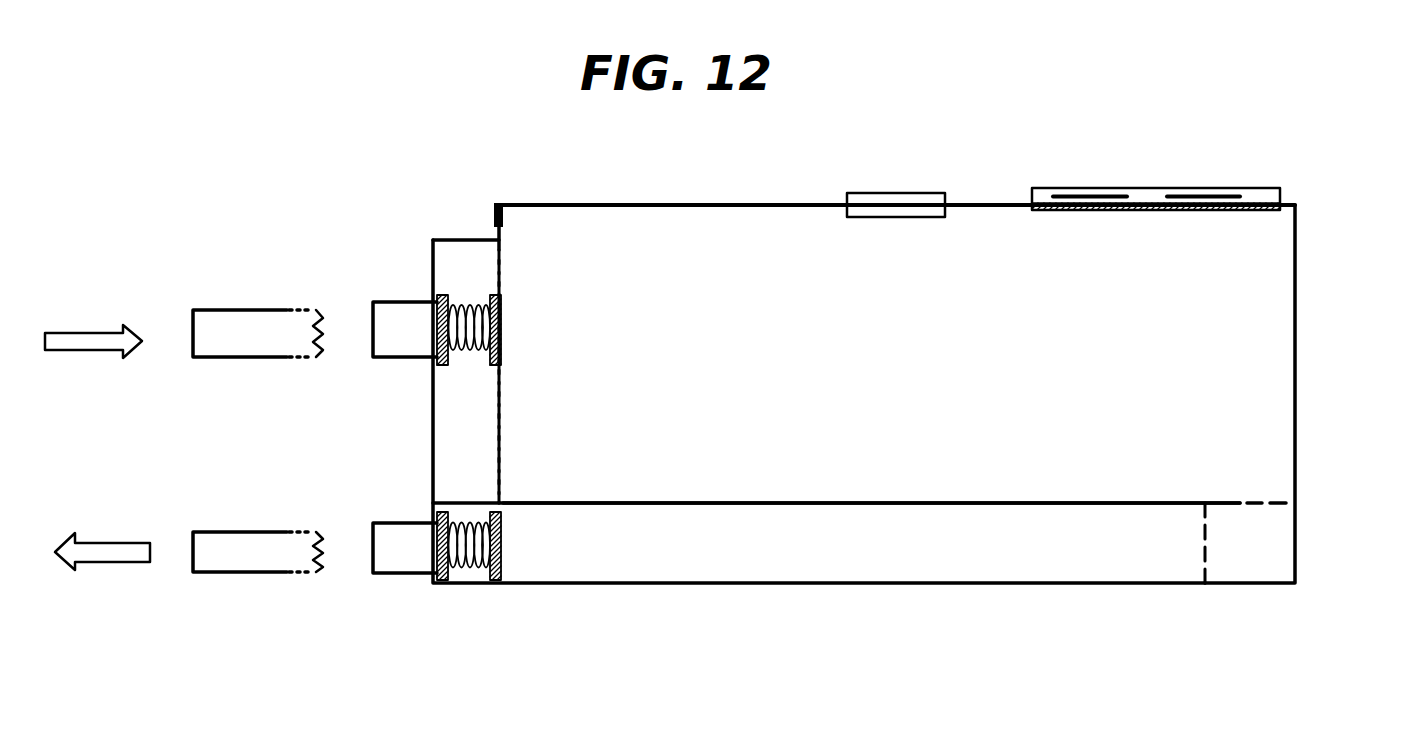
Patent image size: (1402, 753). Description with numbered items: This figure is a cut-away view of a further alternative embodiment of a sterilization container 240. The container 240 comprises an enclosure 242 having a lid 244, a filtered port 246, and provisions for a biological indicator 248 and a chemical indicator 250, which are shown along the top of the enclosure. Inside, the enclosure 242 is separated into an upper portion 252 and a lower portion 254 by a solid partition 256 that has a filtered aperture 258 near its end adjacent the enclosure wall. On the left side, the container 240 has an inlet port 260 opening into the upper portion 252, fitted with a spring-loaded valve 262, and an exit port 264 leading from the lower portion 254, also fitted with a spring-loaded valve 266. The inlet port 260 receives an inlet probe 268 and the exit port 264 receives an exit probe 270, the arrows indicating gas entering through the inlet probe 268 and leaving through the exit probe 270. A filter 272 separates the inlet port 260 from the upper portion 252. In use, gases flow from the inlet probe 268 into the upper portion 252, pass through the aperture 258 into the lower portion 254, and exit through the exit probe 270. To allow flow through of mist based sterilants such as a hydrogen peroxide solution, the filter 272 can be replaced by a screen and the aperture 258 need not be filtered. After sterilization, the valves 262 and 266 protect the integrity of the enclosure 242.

The container 240 is at (581, 614).
The enclosure 242 is at (1296, 382).
The lid 244 is at (497, 203).
The filtered port 246 is at (888, 193).
The biological indicator 248 is at (1088, 194).
The chemical indicator 250 is at (1200, 194).
The upper portion 252 is at (867, 369).
The lower portion 254 is at (867, 554).
The solid partition 256 is at (1062, 502).
The filtered aperture 258 is at (1250, 500).
The inlet port 260 is at (385, 360).
The spring-loaded valve 262 is at (503, 330).
The exit port 264 is at (400, 574).
The spring-loaded valve 266 is at (471, 568).
The inlet probe 268 is at (241, 309).
The exit probe 270 is at (235, 573).
The filter 272 is at (503, 432).